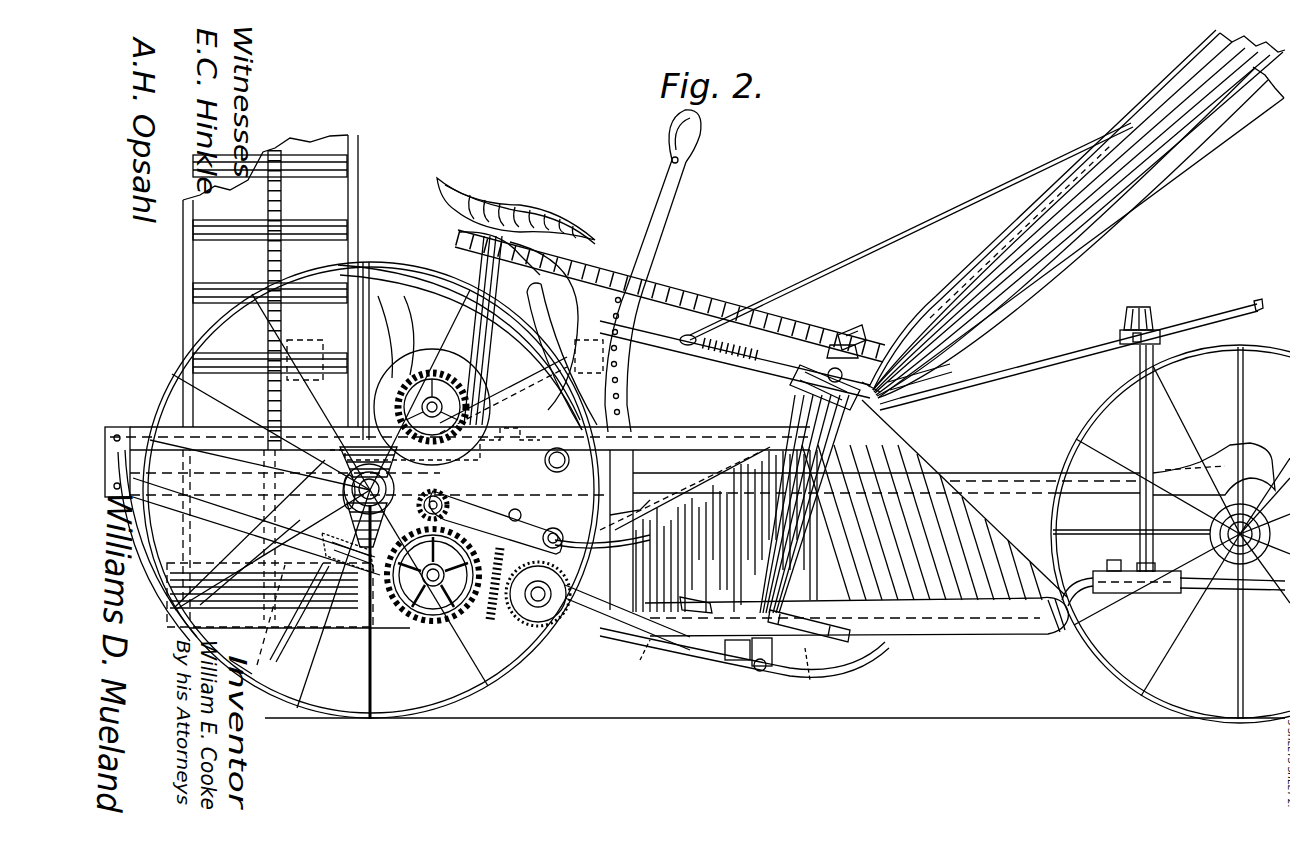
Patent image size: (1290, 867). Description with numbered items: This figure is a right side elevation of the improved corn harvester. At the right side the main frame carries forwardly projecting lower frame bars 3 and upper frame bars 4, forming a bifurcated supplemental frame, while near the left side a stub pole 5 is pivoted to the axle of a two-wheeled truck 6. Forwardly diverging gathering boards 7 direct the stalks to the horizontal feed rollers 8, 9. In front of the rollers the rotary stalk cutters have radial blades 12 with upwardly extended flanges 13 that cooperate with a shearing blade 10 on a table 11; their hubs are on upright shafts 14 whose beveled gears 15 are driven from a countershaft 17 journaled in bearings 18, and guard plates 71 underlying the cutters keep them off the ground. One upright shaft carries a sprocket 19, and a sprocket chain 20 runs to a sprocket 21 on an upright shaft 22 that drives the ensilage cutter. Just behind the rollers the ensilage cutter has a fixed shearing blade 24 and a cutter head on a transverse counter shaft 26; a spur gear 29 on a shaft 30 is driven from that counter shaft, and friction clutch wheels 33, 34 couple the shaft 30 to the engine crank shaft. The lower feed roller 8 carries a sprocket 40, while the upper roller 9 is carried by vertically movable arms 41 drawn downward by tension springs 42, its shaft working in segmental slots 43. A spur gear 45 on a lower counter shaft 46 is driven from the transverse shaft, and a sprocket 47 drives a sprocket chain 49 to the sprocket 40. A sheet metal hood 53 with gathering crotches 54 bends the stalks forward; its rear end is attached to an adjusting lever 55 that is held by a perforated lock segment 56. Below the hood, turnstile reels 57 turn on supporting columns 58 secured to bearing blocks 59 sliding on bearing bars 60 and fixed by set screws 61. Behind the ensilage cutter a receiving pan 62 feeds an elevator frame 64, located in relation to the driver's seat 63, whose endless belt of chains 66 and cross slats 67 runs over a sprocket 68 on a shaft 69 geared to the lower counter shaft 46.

The lower frame bars 3 is at (895, 625).
The upper frame bars 4 is at (715, 428).
The stub pole 5 is at (993, 473).
The two-wheeled truck 6 is at (1230, 345).
The gathering boards 7 is at (934, 500).
The lower feed roller 8 is at (515, 615).
The upper feed roller 9 is at (605, 533).
The shearing blade 10 is at (728, 655).
The table 11 is at (631, 665).
The radial blades 12 is at (800, 668).
The upwardly extended flanges 13 is at (838, 625).
The upright shafts 14 is at (800, 525).
The beveled gears 15 is at (920, 368).
The countershaft 17 is at (880, 392).
The bearings 18 is at (798, 375).
The sprocket 19 is at (852, 352).
The sprocket chain 20 is at (703, 270).
The sprocket 21 is at (472, 225).
The upright shaft 22 is at (468, 292).
The fixed shearing blade 24 is at (345, 494).
The transverse counter shaft 26 is at (340, 540).
The spur gear 29 is at (430, 350).
The shaft 30 is at (470, 370).
The friction clutch wheel 33 is at (385, 326).
The friction clutch wheel 34 is at (413, 324).
The sprocket 40 is at (548, 625).
The vertically movable arms 41 is at (476, 505).
The tension springs 42 is at (492, 612).
The segmental slots 43 is at (652, 508).
The spur gear 45 is at (407, 617).
The lower counter shaft 46 is at (432, 590).
The sprocket 47 is at (445, 587).
The sprocket chain 49 is at (478, 676).
The sheet metal hood 53 is at (1140, 172).
The gathering crotches 54 is at (1197, 140).
The adjusting lever 55 is at (765, 350).
The perforated lock segment 56 is at (645, 318).
The reels 57 is at (998, 362).
The supporting columns 58 is at (1150, 440).
The bearing blocks 59 is at (1160, 596).
The bearing bars 60 is at (1230, 585).
The set screws 61 is at (1118, 566).
The receiving pan 62 is at (140, 560).
The driver's seat 63 is at (540, 205).
The elevator frame 64 is at (355, 190).
The chains 66 is at (283, 212).
The cross slats 67 is at (337, 232).
The sprocket 68 is at (257, 625).
The shaft 69 is at (320, 590).
The guard plates 71 is at (845, 665).